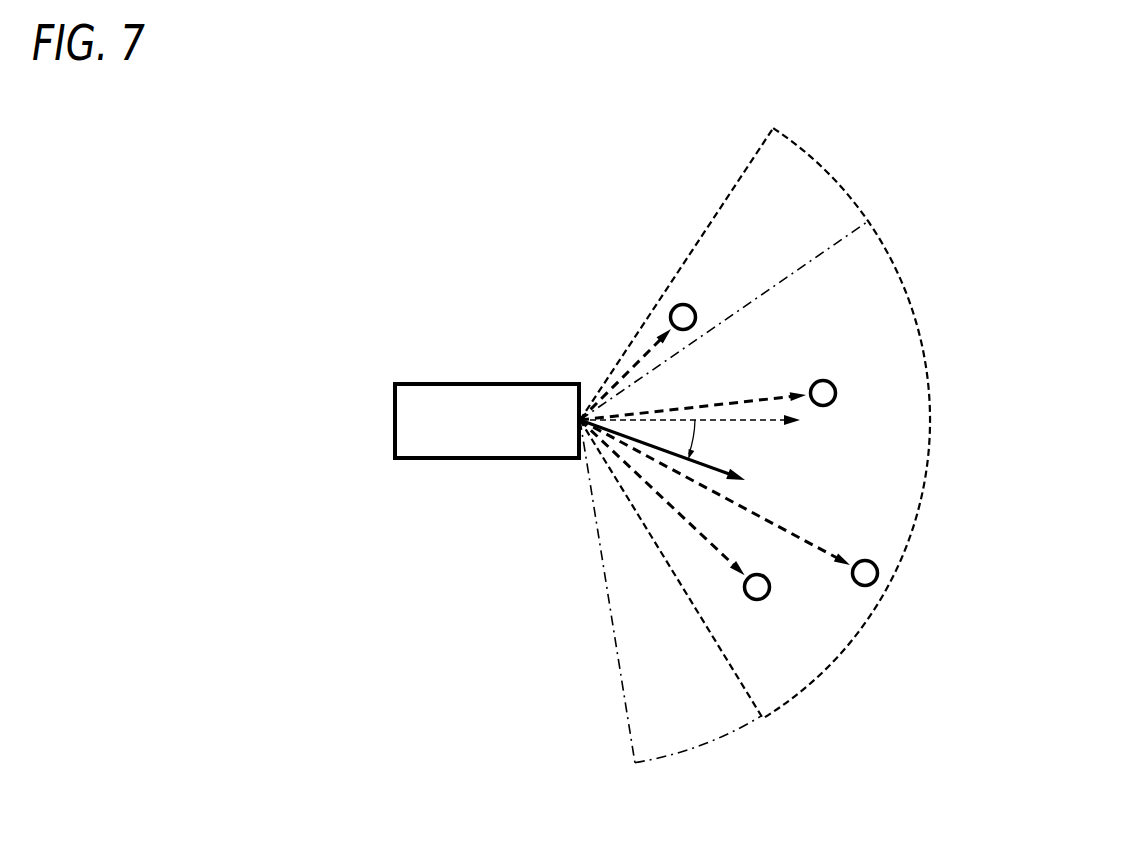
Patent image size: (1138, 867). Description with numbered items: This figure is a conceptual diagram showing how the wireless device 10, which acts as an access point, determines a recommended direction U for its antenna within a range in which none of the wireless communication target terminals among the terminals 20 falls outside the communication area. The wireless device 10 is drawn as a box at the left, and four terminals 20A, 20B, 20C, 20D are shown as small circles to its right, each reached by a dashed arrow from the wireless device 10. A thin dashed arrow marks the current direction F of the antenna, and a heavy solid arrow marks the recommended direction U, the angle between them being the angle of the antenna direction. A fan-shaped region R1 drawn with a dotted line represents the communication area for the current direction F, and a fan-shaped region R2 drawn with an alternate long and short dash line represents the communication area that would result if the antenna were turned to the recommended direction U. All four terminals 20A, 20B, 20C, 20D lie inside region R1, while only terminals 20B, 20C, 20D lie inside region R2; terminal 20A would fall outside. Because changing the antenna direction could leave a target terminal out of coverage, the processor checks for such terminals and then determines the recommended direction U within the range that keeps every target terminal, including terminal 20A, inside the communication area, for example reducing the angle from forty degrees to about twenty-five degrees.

The wireless device 10 is at (484, 383).
The terminal 20 is at (804, 433).
The terminal 20A is at (676, 311).
The terminal 20B is at (838, 398).
The terminal 20C is at (878, 562).
The terminal 20D is at (770, 597).
The region R1 is at (826, 164).
The region R2 is at (710, 758).
The current direction F is at (698, 423).
The recommended direction U is at (673, 461).